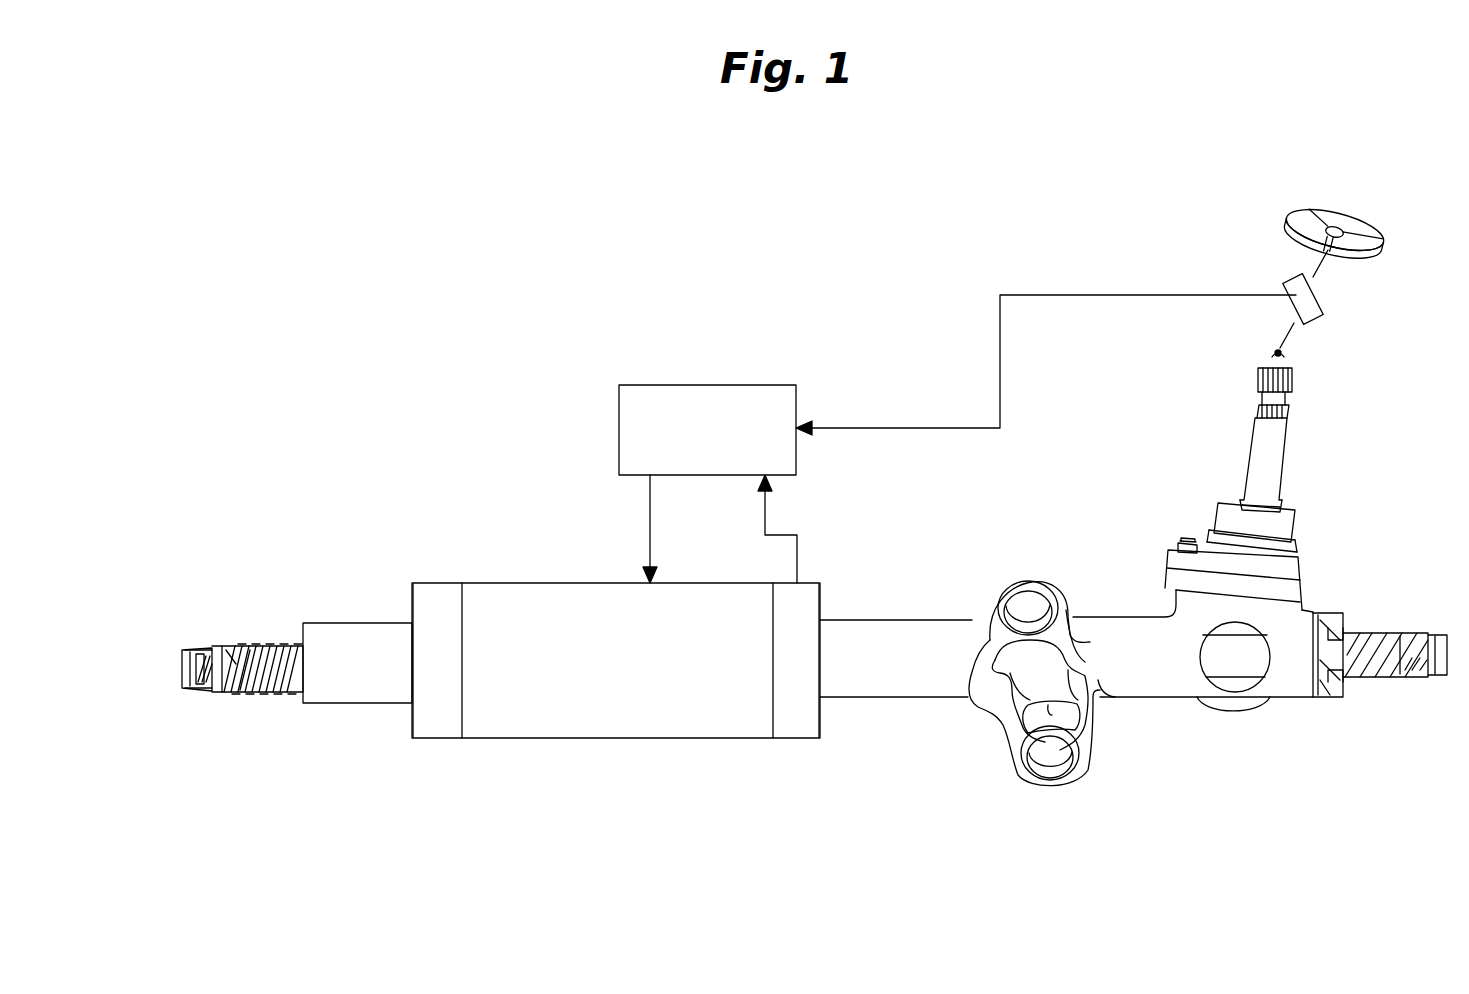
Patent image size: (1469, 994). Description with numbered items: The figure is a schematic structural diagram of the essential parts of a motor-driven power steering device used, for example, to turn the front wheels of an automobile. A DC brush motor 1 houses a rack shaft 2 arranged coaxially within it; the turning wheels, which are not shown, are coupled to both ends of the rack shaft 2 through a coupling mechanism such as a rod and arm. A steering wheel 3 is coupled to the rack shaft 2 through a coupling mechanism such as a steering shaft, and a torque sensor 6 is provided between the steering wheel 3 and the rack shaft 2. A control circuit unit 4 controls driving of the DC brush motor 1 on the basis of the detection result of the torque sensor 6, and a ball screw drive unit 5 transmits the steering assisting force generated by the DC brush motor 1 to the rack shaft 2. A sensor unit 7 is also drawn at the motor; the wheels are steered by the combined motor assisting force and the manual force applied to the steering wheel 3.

The DC brush motor 1 is at (501, 600).
The rack shaft 2 is at (272, 622).
The steering wheel 3 is at (1315, 210).
The control circuit unit 4 is at (680, 393).
The ball screw drive unit 5 is at (440, 712).
The torque sensor 6 is at (1298, 288).
The sensor unit 7 is at (800, 706).